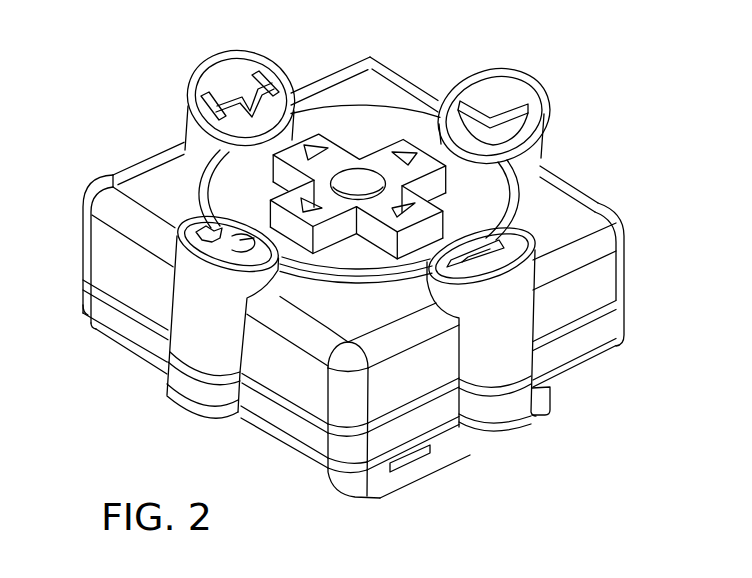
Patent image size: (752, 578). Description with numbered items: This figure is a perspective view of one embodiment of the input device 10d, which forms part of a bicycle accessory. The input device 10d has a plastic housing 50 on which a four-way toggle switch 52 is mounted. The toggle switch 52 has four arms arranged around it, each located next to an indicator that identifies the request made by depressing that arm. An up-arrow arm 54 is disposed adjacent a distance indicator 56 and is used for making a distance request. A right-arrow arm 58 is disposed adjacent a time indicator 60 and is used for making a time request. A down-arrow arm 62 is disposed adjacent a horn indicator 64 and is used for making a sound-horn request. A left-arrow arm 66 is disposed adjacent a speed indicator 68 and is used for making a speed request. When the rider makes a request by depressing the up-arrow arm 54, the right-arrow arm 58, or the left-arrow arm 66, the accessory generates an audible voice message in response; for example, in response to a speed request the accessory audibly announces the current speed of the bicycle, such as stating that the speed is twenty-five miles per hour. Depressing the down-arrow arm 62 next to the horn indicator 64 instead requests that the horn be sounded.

The input device 10d is at (131, 115).
The plastic housing 50 is at (598, 275).
The four-way toggle switch 52 is at (388, 140).
The up-arrow arm 54 is at (318, 140).
The distance indicator 56 is at (230, 73).
The right-arrow arm 58 is at (524, 162).
The time indicator 60 is at (501, 93).
The down-arrow arm 62 is at (397, 220).
The horn indicator 64 is at (509, 256).
The left-arrow arm 66 is at (272, 194).
The speed indicator 68 is at (282, 262).